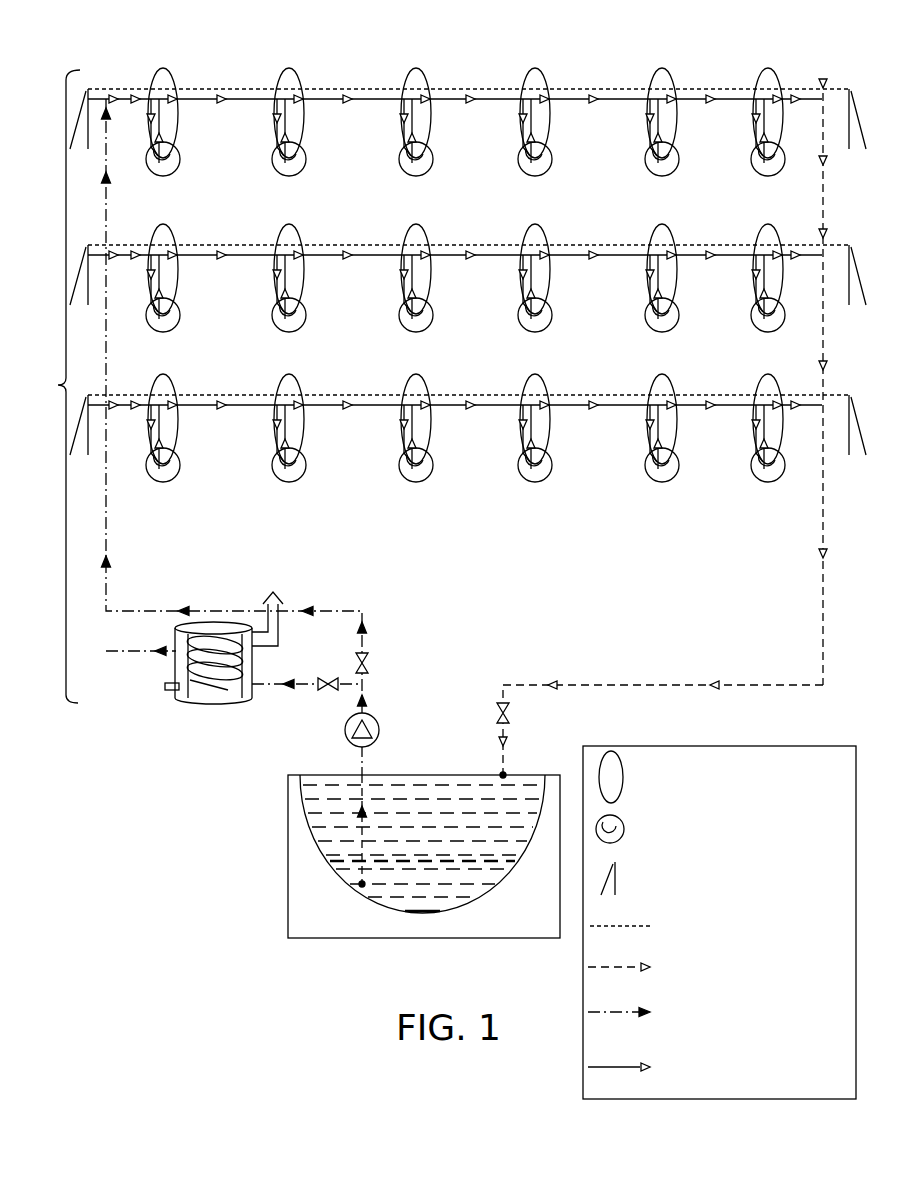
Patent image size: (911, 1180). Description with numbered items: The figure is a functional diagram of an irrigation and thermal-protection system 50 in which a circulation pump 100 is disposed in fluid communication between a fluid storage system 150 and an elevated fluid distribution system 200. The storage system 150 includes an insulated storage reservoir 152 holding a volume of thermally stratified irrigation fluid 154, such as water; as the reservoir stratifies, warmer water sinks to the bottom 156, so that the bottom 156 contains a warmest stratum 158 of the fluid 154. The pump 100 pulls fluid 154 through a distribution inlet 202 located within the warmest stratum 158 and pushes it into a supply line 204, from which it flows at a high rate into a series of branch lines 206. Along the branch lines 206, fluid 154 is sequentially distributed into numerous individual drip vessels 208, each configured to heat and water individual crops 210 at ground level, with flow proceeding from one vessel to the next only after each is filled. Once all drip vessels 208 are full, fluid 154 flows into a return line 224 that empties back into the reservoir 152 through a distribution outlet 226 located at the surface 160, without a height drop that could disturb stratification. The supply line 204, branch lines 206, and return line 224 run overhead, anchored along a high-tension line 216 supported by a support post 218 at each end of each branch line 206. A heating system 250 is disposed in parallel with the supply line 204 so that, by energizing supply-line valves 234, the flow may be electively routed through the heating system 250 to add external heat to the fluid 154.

The irrigation and thermal-protection system 50 is at (100, 57).
The elevated fluid distribution system 200 is at (455, 369).
The high-tension line 216 is at (340, 88).
The branch lines 206 is at (210, 103).
The drip vessels 208 is at (303, 161).
The individual crops 210 is at (428, 118).
The return line 224 is at (824, 158).
The support post 218 is at (852, 416).
The supply line 204 is at (108, 470).
The supply-line valves 234 is at (325, 692).
The heating system 250 is at (172, 697).
The circulation pump 100 is at (347, 737).
The distribution outlet 226 is at (507, 772).
The fluid storage system 150 is at (245, 825).
The surface 160 is at (405, 775).
The insulated storage reservoir 152 is at (318, 840).
The thermally stratified irrigation fluid 154 is at (441, 818).
The warmest stratum 158 is at (408, 893).
The bottom 156 is at (430, 915).
The distribution inlet 202 is at (358, 886).